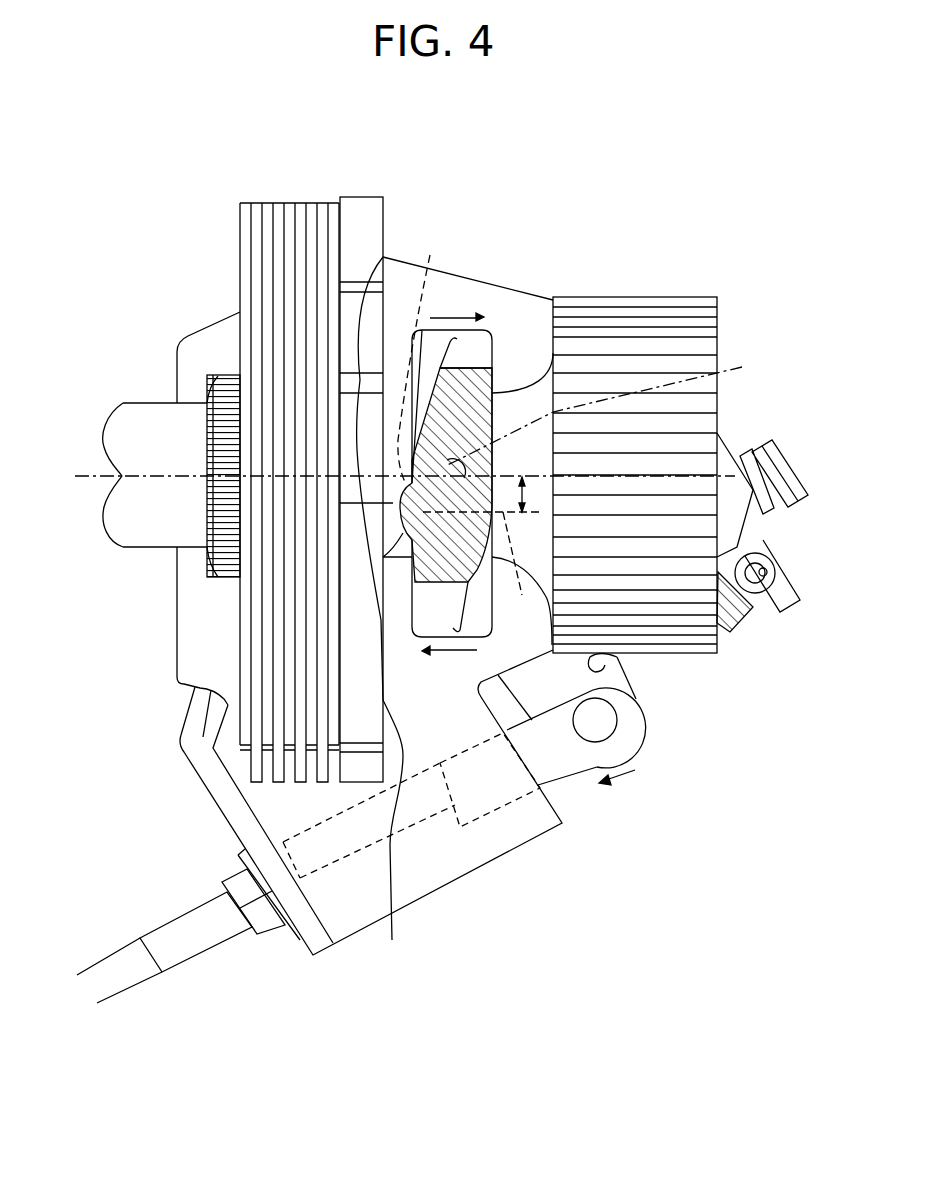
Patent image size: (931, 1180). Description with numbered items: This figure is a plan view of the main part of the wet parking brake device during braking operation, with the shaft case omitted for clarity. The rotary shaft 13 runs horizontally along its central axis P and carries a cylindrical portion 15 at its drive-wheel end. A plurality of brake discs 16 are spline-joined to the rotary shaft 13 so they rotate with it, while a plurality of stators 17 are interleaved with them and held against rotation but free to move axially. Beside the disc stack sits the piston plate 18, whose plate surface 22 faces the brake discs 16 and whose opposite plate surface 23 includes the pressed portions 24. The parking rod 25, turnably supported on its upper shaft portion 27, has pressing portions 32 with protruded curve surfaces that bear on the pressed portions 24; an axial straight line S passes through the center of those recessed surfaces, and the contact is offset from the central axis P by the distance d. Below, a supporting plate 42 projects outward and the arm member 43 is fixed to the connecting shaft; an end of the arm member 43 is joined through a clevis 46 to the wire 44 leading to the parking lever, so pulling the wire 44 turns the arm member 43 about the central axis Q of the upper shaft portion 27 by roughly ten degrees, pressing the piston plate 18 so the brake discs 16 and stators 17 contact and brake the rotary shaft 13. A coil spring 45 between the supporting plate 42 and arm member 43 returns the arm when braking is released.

The rotary shaft 13 is at (150, 400).
The cylindrical portion 15 is at (686, 296).
The brake discs 16 is at (334, 201).
The stators 17 is at (322, 784).
The piston plate 18 is at (361, 190).
The plate surface 22 is at (338, 650).
The plate surface 23 is at (383, 615).
The pressed portions 24 is at (393, 503).
The parking rod 25 is at (493, 332).
The upper shaft portion 27 is at (424, 351).
The pressing portions 32 is at (402, 535).
The supporting plate 42 is at (433, 897).
The arm member 43 is at (643, 700).
The wire 44 is at (158, 927).
The coil spring 45 is at (728, 628).
The clevis 46 is at (565, 783).
The central axis P is at (396, 476).
The central axis Q is at (603, 412).
The axial straight line S is at (514, 568).
The distance d is at (484, 494).